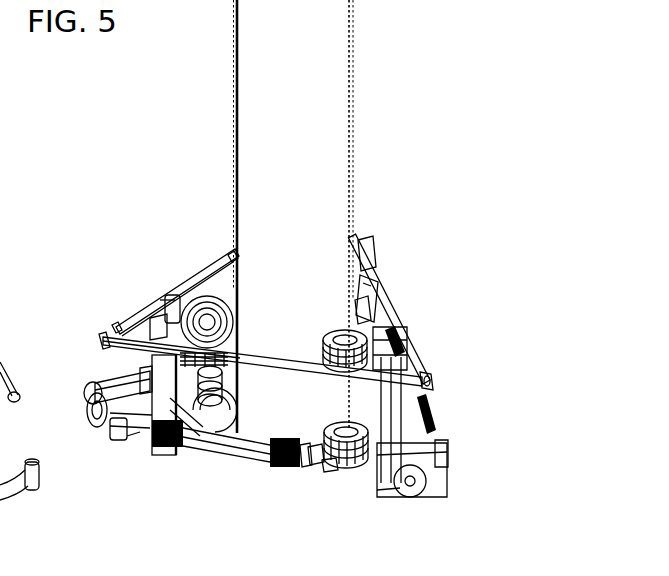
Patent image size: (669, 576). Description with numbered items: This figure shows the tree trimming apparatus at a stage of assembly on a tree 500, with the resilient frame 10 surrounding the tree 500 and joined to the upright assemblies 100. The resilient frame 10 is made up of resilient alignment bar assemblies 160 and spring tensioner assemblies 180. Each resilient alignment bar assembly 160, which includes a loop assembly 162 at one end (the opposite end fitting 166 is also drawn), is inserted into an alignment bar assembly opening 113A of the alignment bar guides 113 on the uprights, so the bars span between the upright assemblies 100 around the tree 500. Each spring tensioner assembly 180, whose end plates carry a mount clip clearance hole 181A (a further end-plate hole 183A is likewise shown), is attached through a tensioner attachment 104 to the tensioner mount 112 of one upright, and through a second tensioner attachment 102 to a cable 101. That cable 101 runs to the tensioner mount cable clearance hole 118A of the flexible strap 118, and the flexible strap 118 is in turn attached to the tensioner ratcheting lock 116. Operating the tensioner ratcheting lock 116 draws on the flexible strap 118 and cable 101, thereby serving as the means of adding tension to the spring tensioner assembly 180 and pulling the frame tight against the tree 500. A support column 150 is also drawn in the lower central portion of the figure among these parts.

The resilient frame 10 is at (228, 262).
The upright assemblies 100 is at (377, 530).
The cable 101 is at (332, 462).
The second tensioner attachment 102 is at (318, 462).
The tensioner attachment 104 is at (133, 442).
The tensioner mount 112 is at (120, 443).
The alignment bar guides 113 is at (133, 290).
The alignment bar assembly opening 113A is at (158, 292).
The tensioner ratcheting lock 116 is at (88, 412).
The flexible strap 118 is at (128, 388).
The tensioner mount cable clearance hole 118A is at (148, 376).
The support column 150 is at (203, 418).
The resilient alignment bar assemblies 160 is at (215, 265).
The loop assembly 162 is at (113, 326).
The end cap 166 is at (108, 340).
The spring tensioner assemblies 180 is at (257, 447).
The mount clip clearance hole 181A is at (148, 458).
The rod end 183A is at (300, 468).
The tree 500 is at (263, 150).